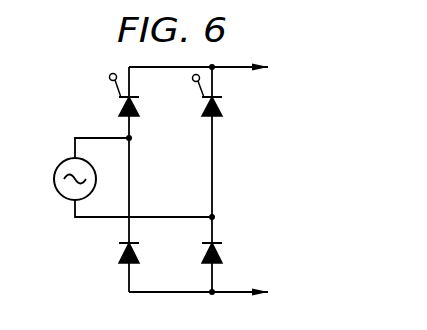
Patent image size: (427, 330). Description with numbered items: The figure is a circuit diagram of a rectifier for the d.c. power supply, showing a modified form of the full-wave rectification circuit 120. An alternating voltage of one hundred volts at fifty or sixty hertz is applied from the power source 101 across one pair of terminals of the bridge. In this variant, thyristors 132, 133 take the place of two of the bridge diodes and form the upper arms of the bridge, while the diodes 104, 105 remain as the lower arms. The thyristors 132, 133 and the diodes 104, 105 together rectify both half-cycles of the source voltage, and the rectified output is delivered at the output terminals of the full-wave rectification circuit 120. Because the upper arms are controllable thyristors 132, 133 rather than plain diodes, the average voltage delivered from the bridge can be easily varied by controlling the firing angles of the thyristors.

The power source 101 is at (53, 185).
The diode 104 is at (117, 250).
The diode 105 is at (202, 250).
The full-wave rectification circuit 120 is at (184, 179).
The thyristor 132 is at (140, 107).
The thyristor 133 is at (223, 107).